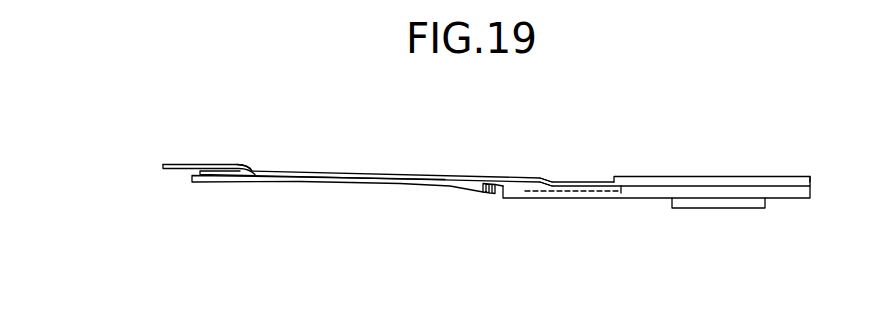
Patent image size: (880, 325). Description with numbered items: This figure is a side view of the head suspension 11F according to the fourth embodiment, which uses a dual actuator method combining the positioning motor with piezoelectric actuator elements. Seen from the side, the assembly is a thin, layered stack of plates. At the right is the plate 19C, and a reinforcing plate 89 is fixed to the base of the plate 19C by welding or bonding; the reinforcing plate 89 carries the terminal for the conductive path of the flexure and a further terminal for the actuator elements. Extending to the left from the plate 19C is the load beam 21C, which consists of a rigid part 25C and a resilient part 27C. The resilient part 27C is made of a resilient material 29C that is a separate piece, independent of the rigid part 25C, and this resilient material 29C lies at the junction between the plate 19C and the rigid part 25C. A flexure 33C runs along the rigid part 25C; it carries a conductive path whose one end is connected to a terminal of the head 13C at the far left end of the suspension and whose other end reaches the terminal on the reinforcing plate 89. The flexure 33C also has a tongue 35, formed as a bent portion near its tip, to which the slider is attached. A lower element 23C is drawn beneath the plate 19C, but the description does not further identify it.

The head 13C is at (156, 174).
The tongue 35 is at (229, 164).
The flexure 33C is at (318, 170).
The rigid part 25C is at (322, 187).
The load beam 21C is at (392, 190).
The resilient material 29C is at (492, 191).
The resilient part 27C is at (497, 187).
The head suspension 11F is at (536, 172).
The reinforcing plate 89 is at (727, 176).
The plate 19C is at (632, 199).
The lower block 23C is at (692, 209).